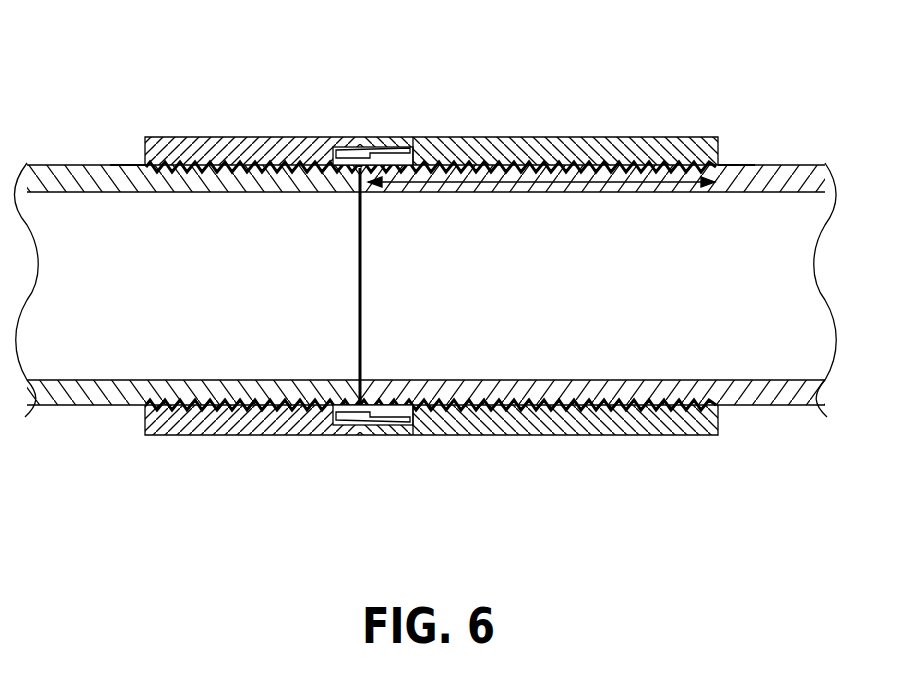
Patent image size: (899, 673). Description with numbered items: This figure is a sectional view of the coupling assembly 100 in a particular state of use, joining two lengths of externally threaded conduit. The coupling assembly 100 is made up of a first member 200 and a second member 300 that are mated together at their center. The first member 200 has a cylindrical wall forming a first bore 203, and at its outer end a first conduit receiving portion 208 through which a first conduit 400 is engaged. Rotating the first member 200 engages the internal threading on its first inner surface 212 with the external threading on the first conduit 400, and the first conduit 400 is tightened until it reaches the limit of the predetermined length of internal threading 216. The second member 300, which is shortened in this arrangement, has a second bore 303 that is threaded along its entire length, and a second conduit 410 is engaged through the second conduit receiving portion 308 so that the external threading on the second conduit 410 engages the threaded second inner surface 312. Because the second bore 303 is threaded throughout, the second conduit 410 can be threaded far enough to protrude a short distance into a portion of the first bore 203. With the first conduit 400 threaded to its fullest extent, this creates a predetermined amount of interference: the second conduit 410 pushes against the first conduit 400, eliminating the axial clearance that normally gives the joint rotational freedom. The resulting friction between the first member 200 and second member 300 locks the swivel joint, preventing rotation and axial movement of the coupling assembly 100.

The coupling assembly 100 is at (397, 128).
The first member 200 is at (594, 137).
The first bore 203 is at (722, 406).
The first conduit receiving portion 208 is at (722, 165).
The first inner surface 212 is at (493, 160).
The internal threading 216 is at (543, 190).
The second member 300 is at (203, 143).
The second bore 303 is at (143, 406).
The second conduit receiving portion 308 is at (146, 165).
The second inner surface 312 is at (274, 163).
The first conduit 400 is at (790, 357).
The second conduit 410 is at (98, 362).